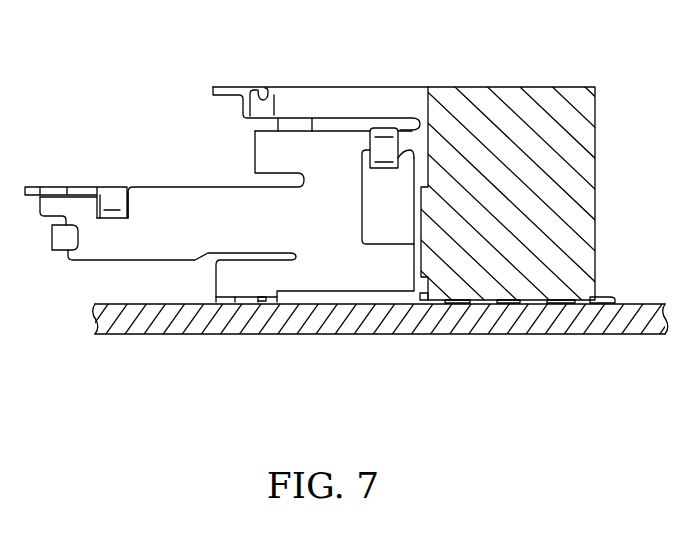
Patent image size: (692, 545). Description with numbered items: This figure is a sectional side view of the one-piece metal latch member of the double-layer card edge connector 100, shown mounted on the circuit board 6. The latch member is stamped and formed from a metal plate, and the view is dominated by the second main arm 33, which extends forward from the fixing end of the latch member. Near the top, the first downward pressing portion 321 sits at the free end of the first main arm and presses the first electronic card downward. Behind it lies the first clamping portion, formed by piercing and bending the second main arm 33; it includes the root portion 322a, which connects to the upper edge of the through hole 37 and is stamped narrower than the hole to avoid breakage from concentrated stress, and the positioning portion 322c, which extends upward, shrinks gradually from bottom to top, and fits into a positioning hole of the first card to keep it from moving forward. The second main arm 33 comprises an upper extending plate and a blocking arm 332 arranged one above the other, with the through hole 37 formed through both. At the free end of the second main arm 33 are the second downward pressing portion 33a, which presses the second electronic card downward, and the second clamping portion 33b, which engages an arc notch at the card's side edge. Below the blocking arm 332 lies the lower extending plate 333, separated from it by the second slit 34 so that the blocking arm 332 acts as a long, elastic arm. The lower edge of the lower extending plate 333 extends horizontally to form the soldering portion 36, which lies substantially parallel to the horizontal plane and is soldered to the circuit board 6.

The double-layer card edge connector 100 is at (596, 178).
The circuit board 6 is at (637, 306).
The second main arm 33 is at (328, 128).
The first downward pressing portion 321 is at (262, 93).
The positioning portion 322c is at (385, 128).
The root portion 322a is at (405, 157).
The second slit 34 is at (258, 253).
The through hole 37 is at (390, 240).
The blocking arm 332 is at (150, 221).
The second downward pressing portion 33a is at (112, 202).
The second clamping portion 33b is at (56, 236).
The lower extending plate 333 is at (246, 277).
The soldering portion 36 is at (263, 300).